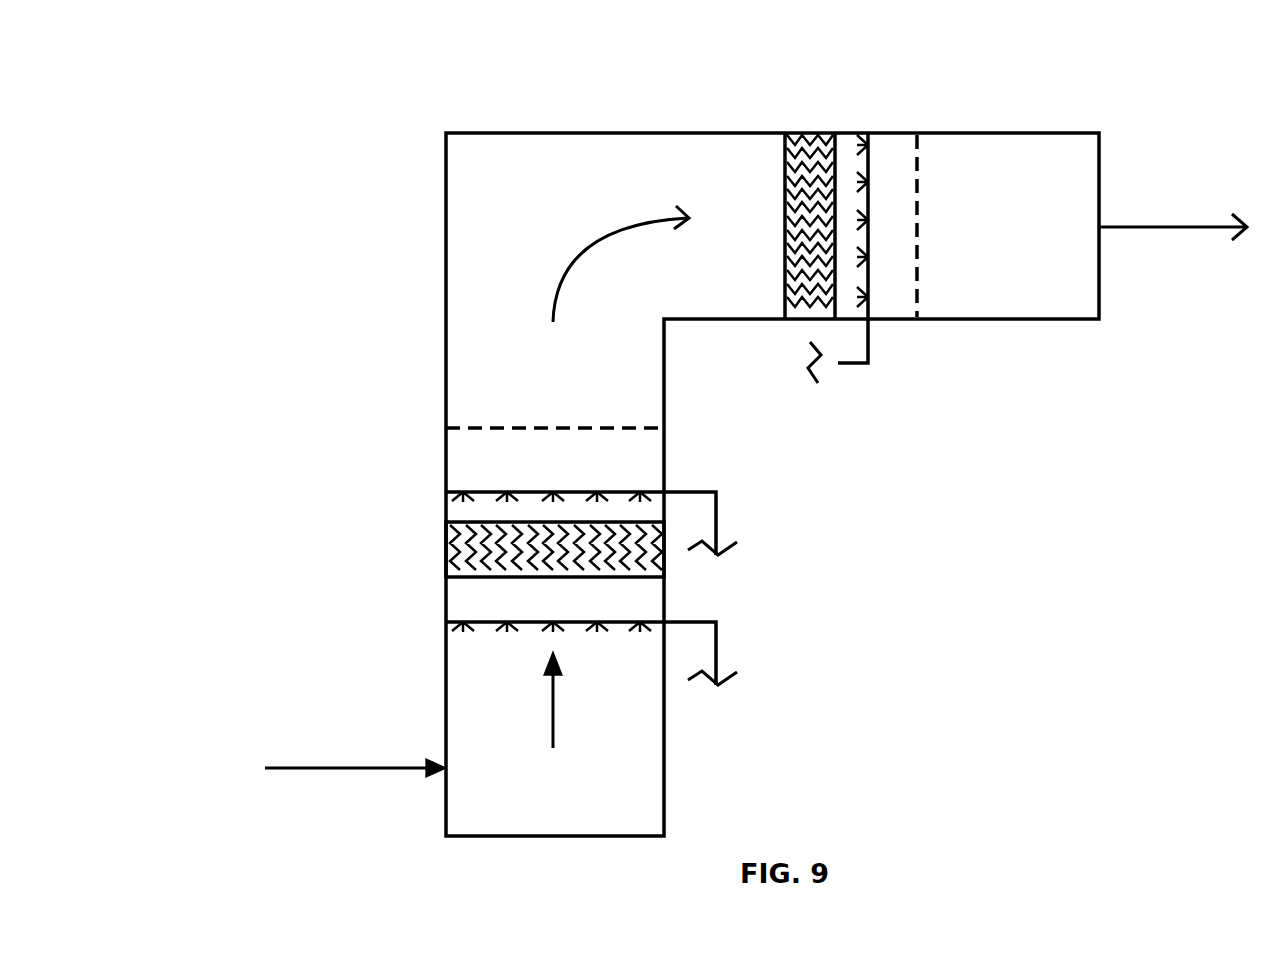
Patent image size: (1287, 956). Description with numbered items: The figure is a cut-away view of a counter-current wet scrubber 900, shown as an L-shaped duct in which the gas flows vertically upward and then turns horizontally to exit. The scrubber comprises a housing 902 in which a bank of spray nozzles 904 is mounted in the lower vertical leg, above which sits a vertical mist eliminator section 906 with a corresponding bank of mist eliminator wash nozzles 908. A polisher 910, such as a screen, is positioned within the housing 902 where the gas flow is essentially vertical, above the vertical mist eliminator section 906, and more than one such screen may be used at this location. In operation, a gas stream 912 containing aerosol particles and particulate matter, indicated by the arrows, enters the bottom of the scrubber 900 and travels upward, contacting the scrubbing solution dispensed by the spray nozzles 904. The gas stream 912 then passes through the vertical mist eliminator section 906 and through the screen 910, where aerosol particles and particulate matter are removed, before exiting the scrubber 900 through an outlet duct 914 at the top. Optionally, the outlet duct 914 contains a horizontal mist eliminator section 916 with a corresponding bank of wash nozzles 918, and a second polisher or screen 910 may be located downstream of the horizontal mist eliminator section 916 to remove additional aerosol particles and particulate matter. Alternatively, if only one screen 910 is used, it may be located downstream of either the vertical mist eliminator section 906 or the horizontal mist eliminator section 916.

The counter-current wet scrubber 900 is at (283, 494).
The housing 902 is at (445, 346).
The bank of spray nozzles 904 is at (717, 652).
The vertical mist eliminator section 906 is at (445, 552).
The bank of mist eliminator wash nozzles 908 is at (717, 523).
The polisher 910 is at (474, 428).
The gas stream 912 is at (347, 768).
The outlet duct 914 is at (1062, 132).
The horizontal mist eliminator section 916 is at (807, 133).
The bank of wash nozzles 918 is at (839, 363).